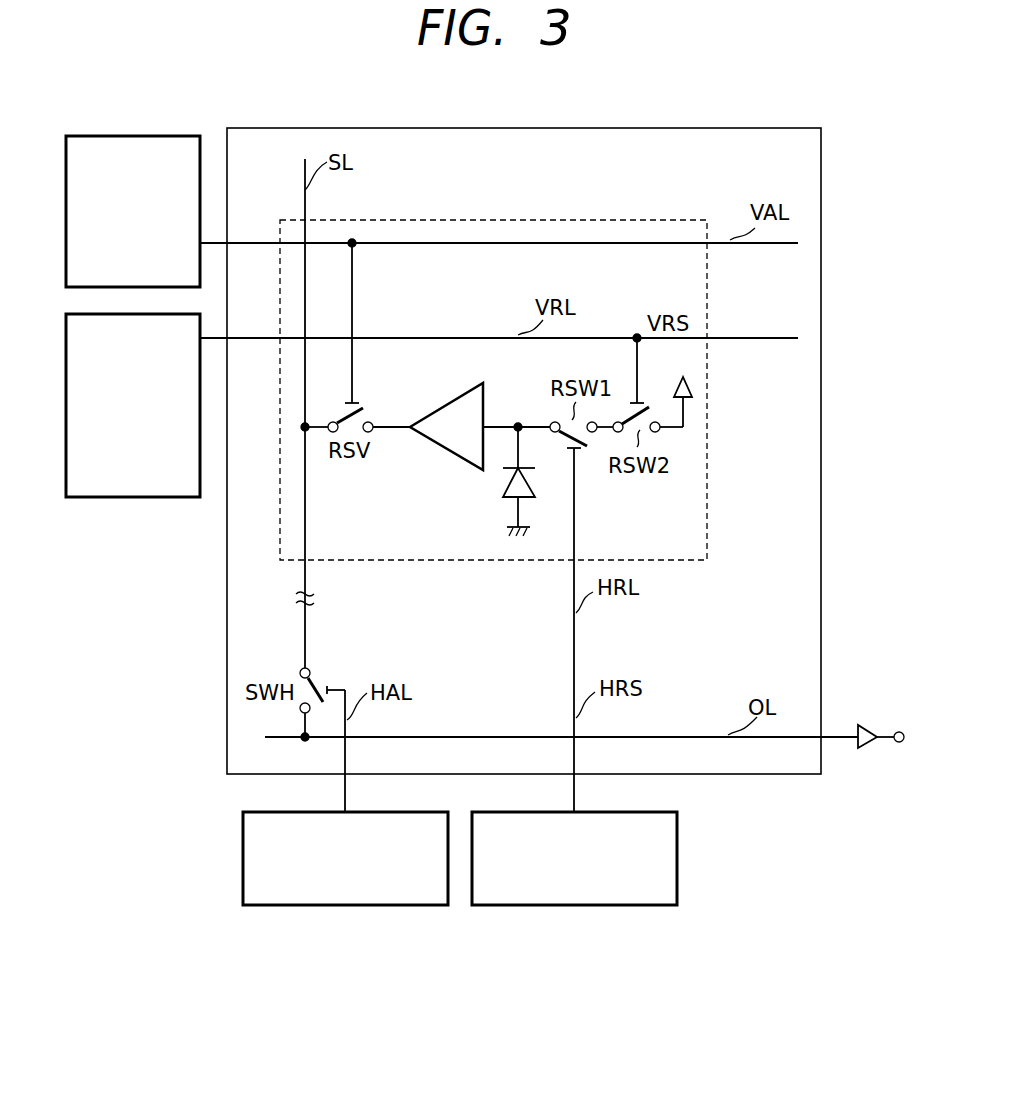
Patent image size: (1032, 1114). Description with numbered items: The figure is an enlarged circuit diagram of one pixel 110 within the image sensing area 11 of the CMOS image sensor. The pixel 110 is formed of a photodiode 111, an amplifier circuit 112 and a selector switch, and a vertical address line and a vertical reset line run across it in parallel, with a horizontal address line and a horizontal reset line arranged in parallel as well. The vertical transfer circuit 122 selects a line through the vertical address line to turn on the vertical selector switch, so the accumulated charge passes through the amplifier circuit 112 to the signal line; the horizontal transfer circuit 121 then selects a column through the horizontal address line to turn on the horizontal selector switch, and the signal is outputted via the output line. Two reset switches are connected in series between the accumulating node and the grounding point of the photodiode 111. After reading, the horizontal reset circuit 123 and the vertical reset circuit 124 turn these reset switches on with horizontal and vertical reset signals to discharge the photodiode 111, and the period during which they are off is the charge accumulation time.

The image sensing area 11 is at (823, 192).
The pixel 110 is at (627, 218).
The photodiode 111 is at (503, 488).
The amplifier circuit 112 is at (448, 400).
The horizontal transfer circuit 121 is at (297, 907).
The vertical transfer circuit 122 is at (145, 133).
The horizontal reset circuit 123 is at (527, 907).
The vertical reset circuit 124 is at (108, 500).